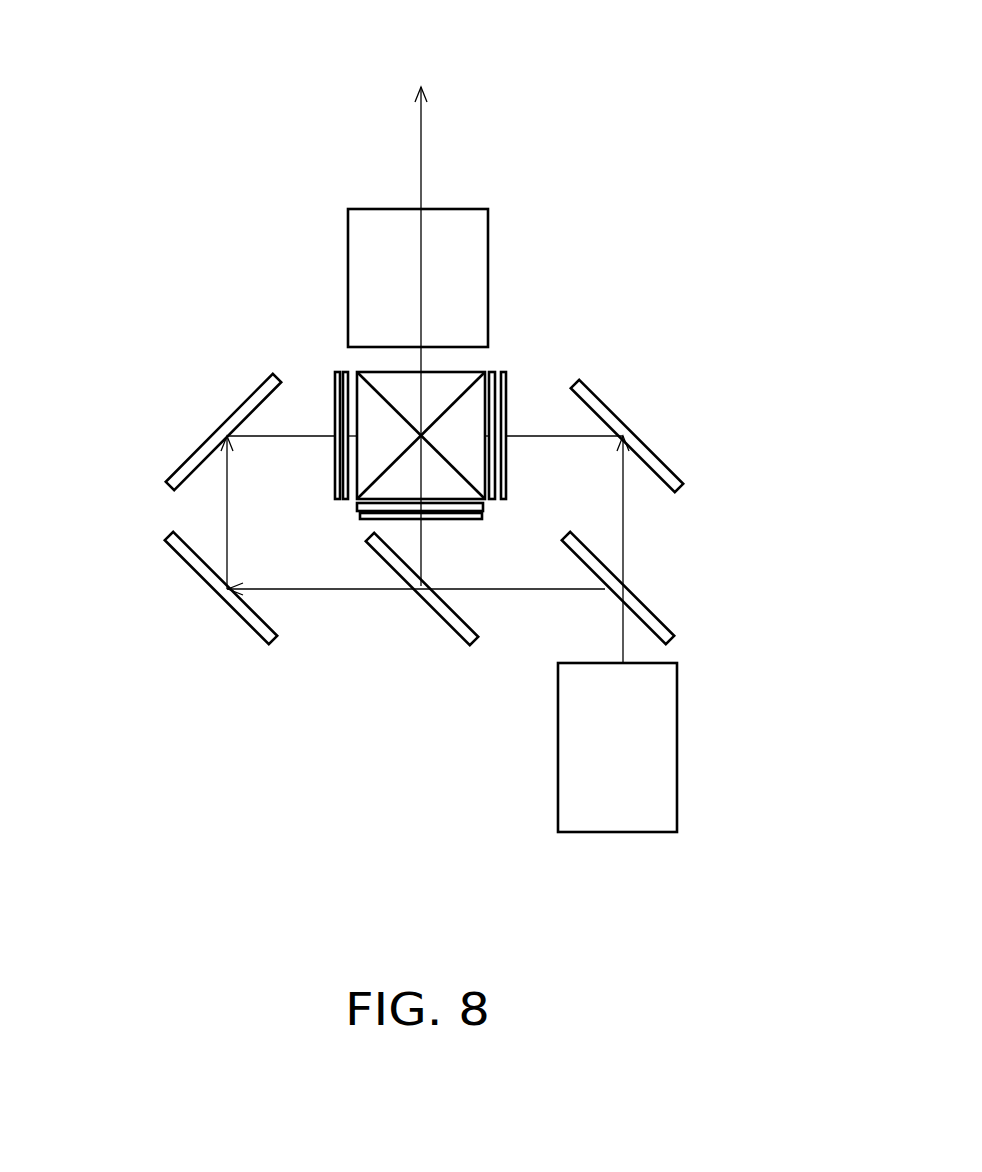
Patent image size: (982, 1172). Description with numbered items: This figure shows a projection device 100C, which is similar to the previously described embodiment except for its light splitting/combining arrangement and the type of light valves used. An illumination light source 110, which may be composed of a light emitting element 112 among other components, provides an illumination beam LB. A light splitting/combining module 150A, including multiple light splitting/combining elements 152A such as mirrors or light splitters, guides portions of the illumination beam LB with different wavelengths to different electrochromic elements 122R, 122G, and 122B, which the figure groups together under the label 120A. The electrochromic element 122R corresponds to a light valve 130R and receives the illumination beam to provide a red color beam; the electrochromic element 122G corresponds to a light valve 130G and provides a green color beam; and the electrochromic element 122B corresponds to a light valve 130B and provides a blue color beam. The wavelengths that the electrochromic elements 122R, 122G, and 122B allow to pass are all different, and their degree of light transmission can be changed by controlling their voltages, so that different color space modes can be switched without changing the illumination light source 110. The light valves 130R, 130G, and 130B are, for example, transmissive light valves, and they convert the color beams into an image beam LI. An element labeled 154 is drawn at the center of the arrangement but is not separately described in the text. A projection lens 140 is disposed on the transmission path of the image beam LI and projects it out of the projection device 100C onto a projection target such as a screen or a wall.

The projection device 100C is at (822, 923).
The illumination light source 110 is at (703, 747).
The light emitting element 112 is at (667, 743).
The light valve module 120A is at (113, 12).
The electrochromic element 122R is at (505, 372).
The electrochromic element 122G is at (336, 376).
The electrochromic element 122B is at (367, 515).
The light valve 130R is at (493, 372).
The light valve 130G is at (345, 372).
The light valve 130B is at (483, 507).
The projection lens 140 is at (480, 243).
The light splitting/combining module 150A is at (140, 395).
The light splitting/combining element 152A is at (197, 575).
The light combining element 154 is at (475, 400).
The image beam LI is at (421, 155).
The illumination beam LB is at (625, 545).